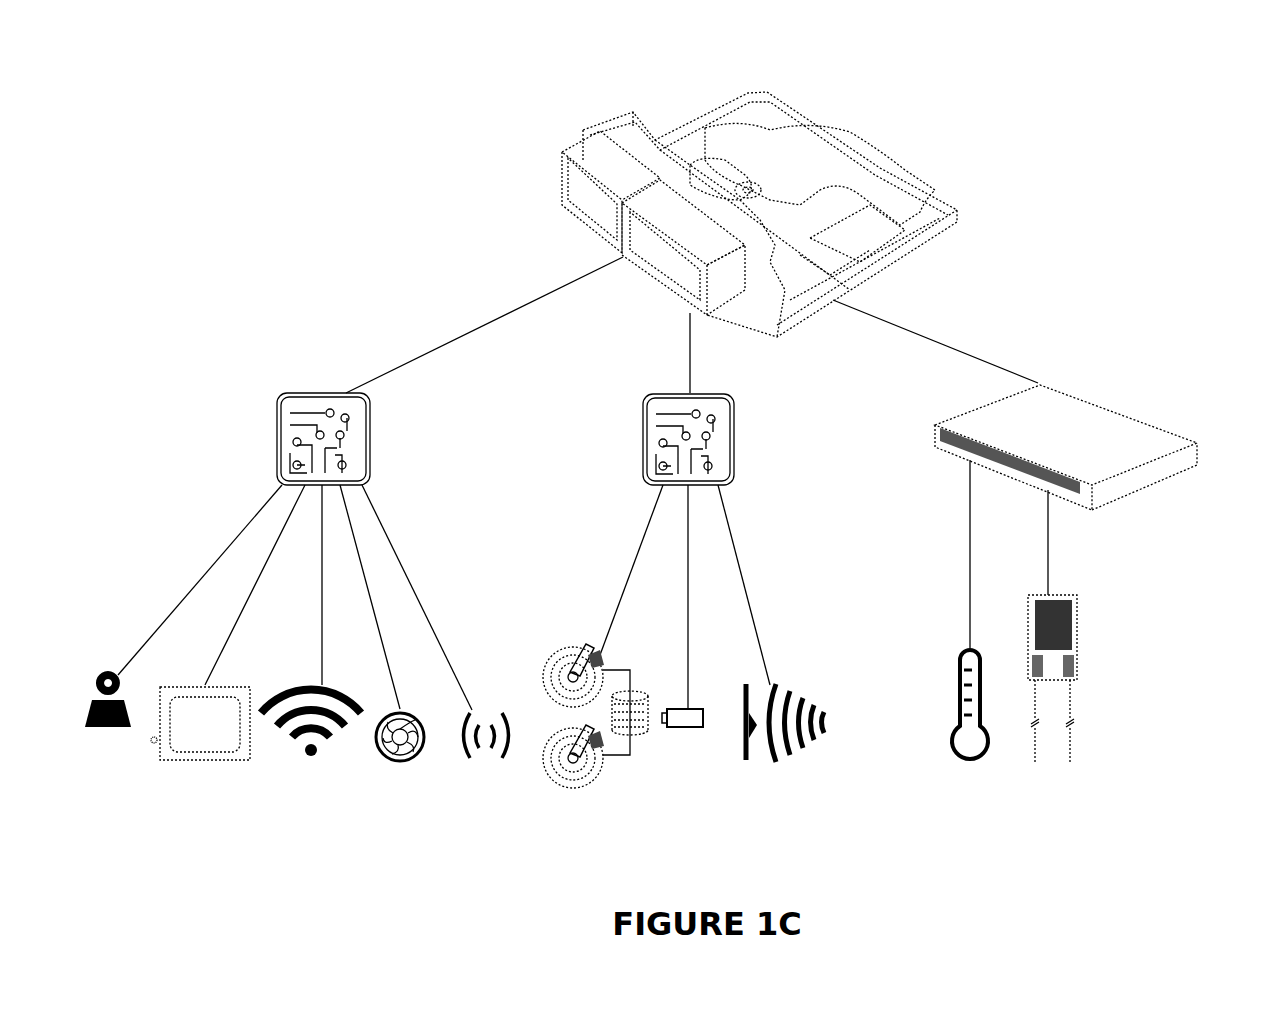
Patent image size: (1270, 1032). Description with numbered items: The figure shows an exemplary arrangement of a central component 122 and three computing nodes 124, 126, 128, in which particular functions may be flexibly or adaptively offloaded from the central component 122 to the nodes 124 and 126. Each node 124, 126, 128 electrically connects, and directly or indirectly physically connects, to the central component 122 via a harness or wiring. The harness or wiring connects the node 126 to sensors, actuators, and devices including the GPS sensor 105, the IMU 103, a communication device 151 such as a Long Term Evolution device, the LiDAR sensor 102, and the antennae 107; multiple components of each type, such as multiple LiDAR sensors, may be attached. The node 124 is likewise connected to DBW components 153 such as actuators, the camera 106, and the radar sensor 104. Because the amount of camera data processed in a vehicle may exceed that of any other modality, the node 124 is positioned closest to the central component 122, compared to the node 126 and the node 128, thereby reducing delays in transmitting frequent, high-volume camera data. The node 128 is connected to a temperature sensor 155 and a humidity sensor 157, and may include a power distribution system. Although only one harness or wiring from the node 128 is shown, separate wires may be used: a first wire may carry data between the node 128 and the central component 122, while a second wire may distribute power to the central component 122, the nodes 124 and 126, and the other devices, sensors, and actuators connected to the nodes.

The central component 122 is at (682, 118).
The node 124 is at (735, 437).
The node 126 is at (371, 436).
The node 128 is at (1143, 486).
The LiDAR sensor 102 is at (400, 762).
The IMU 103 is at (200, 723).
The radar sensor 104 is at (777, 762).
The GPS sensor 105 is at (100, 728).
The camera 106 is at (688, 727).
The antennae 107 is at (475, 758).
The communication device 151 is at (312, 758).
The DBW components 153 is at (575, 789).
The temperature sensor 155 is at (970, 762).
The humidity sensor 157 is at (1077, 642).